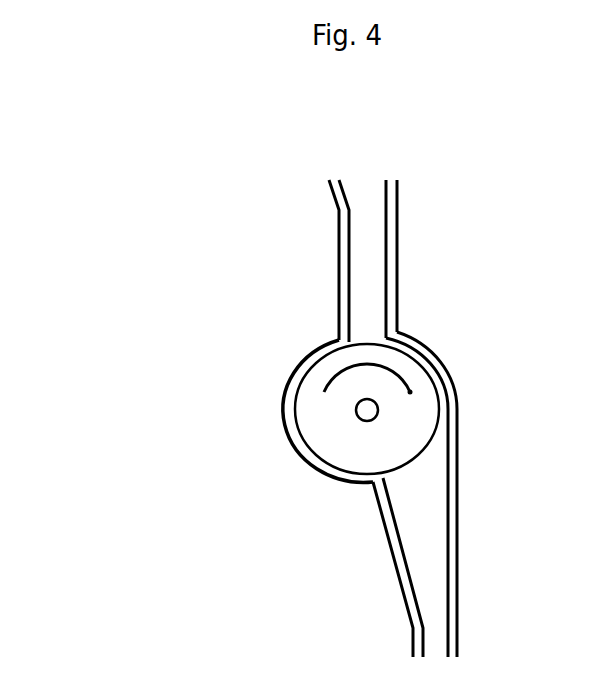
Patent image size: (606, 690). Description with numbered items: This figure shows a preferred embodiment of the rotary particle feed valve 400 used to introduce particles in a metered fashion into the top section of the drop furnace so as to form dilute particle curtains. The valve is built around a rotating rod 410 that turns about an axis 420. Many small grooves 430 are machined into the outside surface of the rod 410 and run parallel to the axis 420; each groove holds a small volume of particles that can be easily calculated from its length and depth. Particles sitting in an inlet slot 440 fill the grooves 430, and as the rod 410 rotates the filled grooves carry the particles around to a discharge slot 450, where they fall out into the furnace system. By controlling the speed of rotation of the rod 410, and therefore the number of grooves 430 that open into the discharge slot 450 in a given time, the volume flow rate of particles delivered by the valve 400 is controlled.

The rotary particle feed valve 400 is at (185, 337).
The rotating rod 410 is at (422, 423).
The axis 420 is at (357, 413).
The grooves 430 is at (308, 465).
The inlet slot 440 is at (365, 243).
The discharge slot 450 is at (422, 520).